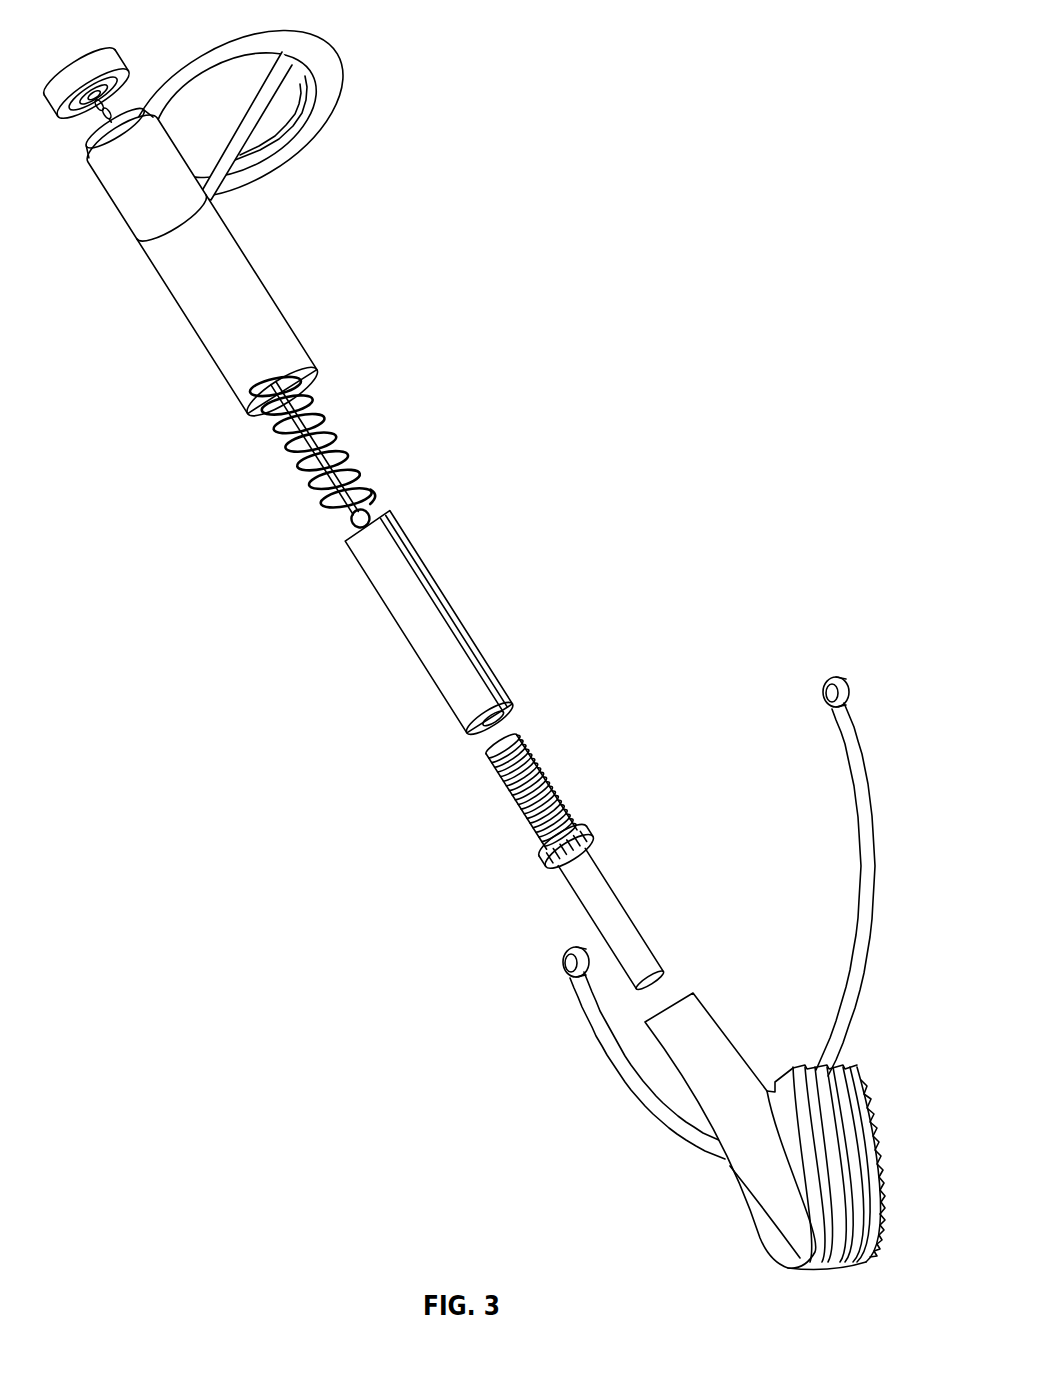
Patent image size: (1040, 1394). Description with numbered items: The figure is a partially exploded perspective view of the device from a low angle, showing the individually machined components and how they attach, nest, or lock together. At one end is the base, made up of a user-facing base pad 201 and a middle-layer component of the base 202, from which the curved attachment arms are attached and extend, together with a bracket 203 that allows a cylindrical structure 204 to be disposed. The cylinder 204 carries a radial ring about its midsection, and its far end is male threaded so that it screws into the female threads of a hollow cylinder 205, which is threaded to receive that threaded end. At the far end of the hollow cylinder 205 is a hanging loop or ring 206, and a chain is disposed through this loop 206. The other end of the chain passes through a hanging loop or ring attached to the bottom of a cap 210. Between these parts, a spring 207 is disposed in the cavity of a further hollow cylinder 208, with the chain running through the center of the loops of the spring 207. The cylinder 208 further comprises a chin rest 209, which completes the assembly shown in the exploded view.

The user-facing base pad 201 is at (884, 1246).
The middle-layer component of the base 202 is at (857, 782).
The bracket 203 is at (760, 1237).
The cylindrical structure 204 is at (614, 917).
The hollow cylinder 205 is at (456, 625).
The hanging loop 206 is at (374, 507).
The spring 207 is at (341, 432).
The hollow cylinder 208 is at (249, 275).
The chin rest 209 is at (331, 53).
The cap 210 is at (76, 66).